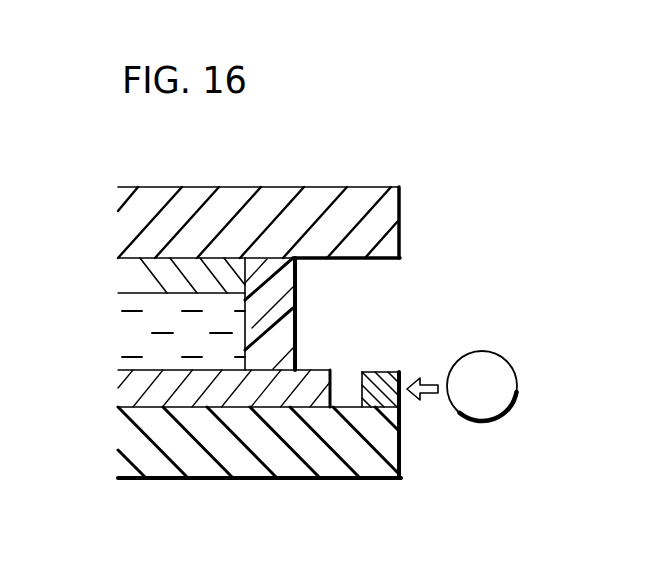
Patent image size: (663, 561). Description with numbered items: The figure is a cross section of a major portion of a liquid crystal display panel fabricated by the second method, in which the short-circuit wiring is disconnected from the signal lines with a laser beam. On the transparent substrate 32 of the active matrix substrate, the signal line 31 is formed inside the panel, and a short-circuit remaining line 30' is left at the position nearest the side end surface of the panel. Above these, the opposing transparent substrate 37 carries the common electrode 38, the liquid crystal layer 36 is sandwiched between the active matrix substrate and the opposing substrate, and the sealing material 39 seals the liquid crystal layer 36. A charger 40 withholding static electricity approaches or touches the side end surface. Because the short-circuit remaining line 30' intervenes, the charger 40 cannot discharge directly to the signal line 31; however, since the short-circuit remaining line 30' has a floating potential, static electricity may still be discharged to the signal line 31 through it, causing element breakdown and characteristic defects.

The short-circuit remaining line 30' is at (398, 360).
The signal line 31 is at (133, 388).
The transparent substrate 32 is at (136, 444).
The liquid crystal layer 36 is at (134, 337).
The opposing transparent substrate 37 is at (142, 231).
The common electrode 38 is at (128, 283).
The sealing material 39 is at (285, 305).
The charger 40 is at (484, 352).